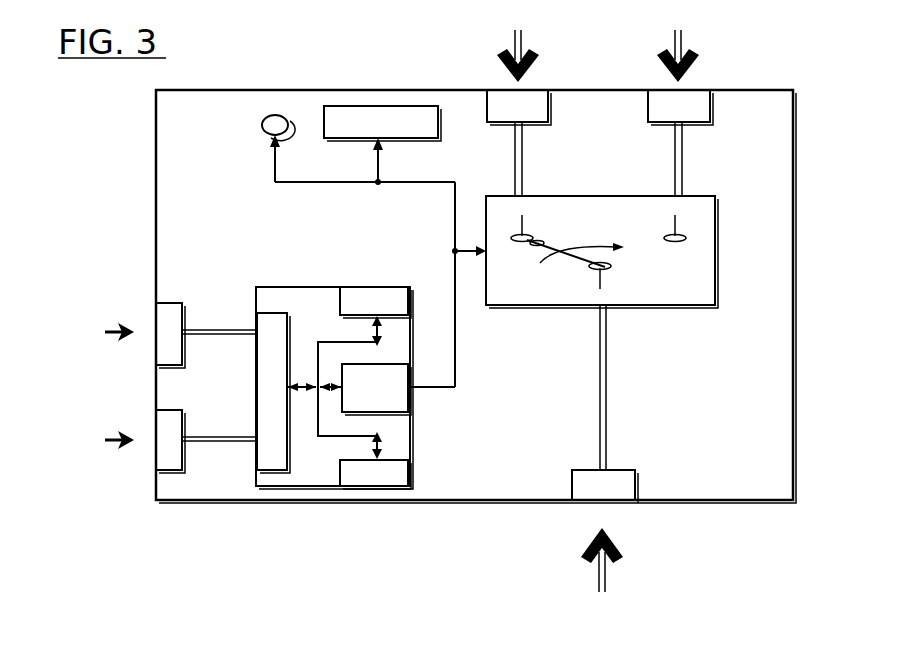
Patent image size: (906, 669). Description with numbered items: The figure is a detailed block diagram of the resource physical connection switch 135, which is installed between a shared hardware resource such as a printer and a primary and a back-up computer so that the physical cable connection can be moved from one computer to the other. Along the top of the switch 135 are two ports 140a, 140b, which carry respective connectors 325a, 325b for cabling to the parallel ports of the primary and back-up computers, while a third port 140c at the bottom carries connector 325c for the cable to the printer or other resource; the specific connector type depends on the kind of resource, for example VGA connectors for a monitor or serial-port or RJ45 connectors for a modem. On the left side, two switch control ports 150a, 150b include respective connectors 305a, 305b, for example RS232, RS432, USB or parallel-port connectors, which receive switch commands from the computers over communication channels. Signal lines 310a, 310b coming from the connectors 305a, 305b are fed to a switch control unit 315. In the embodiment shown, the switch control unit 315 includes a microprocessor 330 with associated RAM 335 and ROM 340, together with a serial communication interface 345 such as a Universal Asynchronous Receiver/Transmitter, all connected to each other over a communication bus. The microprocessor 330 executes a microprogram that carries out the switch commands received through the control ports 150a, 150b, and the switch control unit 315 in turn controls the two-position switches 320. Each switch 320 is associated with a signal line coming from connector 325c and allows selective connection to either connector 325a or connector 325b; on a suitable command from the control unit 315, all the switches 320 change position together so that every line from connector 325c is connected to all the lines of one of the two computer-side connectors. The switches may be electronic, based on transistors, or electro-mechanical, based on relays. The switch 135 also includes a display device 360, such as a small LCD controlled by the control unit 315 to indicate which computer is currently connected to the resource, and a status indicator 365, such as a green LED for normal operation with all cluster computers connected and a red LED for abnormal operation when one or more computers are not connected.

The resource physical connection switch 135 is at (509, 503).
The port 140a is at (537, 80).
The port 140b is at (703, 83).
The third port 140c is at (619, 503).
The switch control port 150a is at (152, 327).
The switch control port 150b is at (151, 450).
The connector 305a is at (163, 350).
The connector 305b is at (165, 472).
The signal line 310a is at (220, 330).
The signal line 310b is at (246, 441).
The switch control unit 315 is at (377, 414).
The two-position switch 320 is at (565, 305).
The connector 325a is at (548, 102).
The connector 325b is at (710, 110).
The connector 325c is at (637, 483).
The microprocessor 330 is at (402, 397).
The RAM 335 is at (350, 482).
The ROM 340 is at (352, 297).
The serial communication interface 345 is at (275, 448).
The display device 360 is at (380, 113).
The status indicator 365 is at (272, 113).